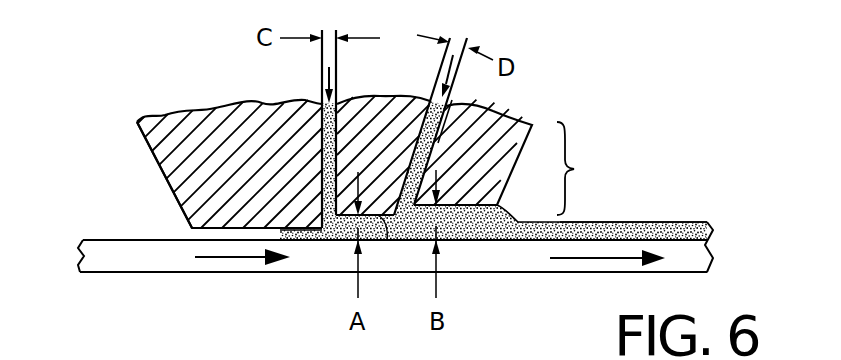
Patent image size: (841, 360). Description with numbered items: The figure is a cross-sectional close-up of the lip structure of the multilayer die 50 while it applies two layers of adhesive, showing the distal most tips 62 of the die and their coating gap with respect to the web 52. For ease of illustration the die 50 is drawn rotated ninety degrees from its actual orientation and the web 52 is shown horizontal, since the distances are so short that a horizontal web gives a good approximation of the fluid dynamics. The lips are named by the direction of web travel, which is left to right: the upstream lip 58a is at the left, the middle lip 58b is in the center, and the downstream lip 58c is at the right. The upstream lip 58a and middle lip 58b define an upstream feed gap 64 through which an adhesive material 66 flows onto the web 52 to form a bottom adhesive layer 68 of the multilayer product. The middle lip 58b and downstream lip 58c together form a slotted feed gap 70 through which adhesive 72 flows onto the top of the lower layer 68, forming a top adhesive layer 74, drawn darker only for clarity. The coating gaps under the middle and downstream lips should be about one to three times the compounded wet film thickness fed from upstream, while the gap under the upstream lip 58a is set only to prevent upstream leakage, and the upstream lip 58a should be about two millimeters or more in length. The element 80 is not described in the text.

The die 50 is at (134, 151).
The web 52 is at (140, 240).
The upstream lip 58a is at (225, 229).
The middle lip 58b is at (387, 222).
The downstream lip 58c is at (477, 207).
The distal most tips 62 is at (584, 168).
The upstream feed gap 64 is at (322, 157).
The adhesive material 66 is at (322, 135).
The bottom adhesive layer 68 is at (660, 222).
The slotted feed gap 70 is at (450, 105).
The adhesive 72 is at (438, 143).
The top adhesive layer 74 is at (614, 222).
The coating bead 80 is at (250, 358).